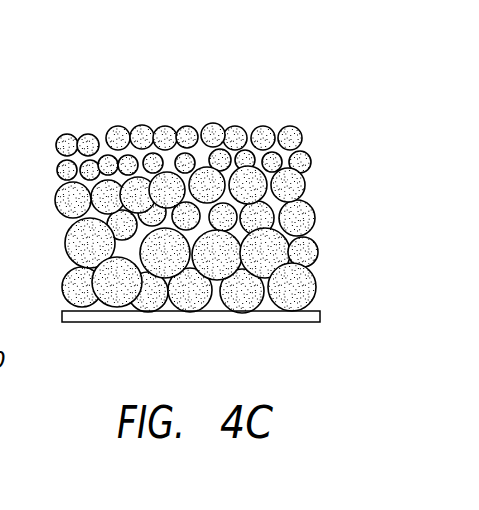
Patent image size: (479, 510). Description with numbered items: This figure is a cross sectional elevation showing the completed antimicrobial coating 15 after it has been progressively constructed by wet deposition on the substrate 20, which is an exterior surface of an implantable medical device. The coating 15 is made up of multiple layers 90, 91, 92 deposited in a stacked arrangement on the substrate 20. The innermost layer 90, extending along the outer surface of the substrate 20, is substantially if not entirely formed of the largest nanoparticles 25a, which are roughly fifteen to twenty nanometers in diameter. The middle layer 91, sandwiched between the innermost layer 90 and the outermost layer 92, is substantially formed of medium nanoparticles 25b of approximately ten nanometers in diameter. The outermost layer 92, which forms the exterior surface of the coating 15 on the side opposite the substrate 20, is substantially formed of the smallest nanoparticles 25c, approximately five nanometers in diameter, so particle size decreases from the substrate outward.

The antimicrobial coating 15 is at (397, 125).
The substrate 20 is at (321, 317).
The largest nanoparticles 25a is at (62, 284).
The medium nanoparticles 25b is at (56, 200).
The smallest nanoparticles 25c is at (214, 124).
The innermost layer 90 is at (328, 234).
The middle layer 91 is at (328, 172).
The outermost layer 92 is at (328, 125).